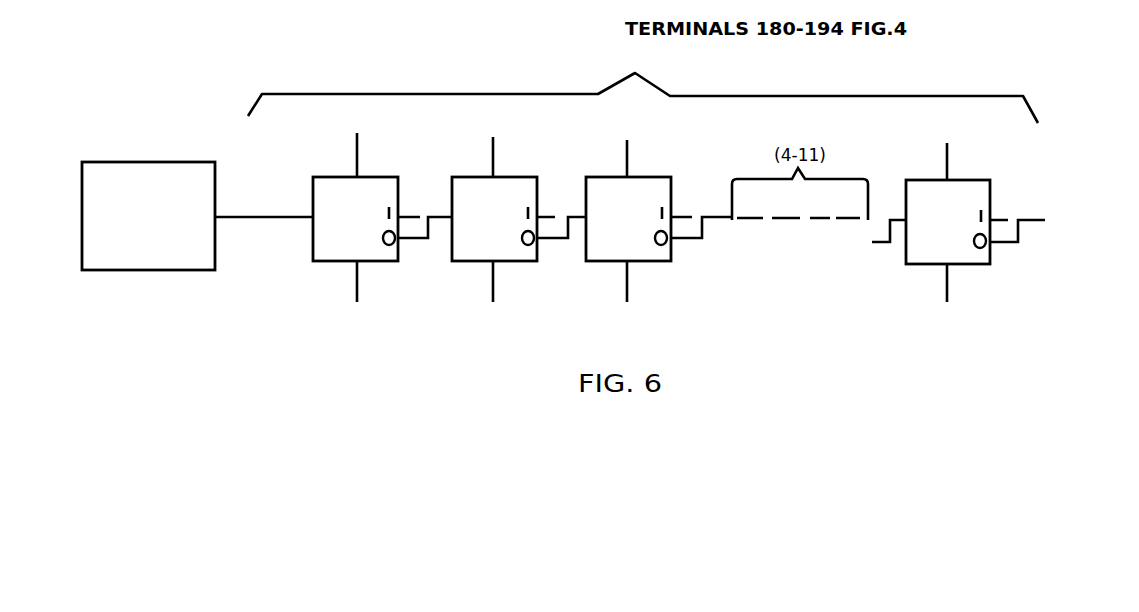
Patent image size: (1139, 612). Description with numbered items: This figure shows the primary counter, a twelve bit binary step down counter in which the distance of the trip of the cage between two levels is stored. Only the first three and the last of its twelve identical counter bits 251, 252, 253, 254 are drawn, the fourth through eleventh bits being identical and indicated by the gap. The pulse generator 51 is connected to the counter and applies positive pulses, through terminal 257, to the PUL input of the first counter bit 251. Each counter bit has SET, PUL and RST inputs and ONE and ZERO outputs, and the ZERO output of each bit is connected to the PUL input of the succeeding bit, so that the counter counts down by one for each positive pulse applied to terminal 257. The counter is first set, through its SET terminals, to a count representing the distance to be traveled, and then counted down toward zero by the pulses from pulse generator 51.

The pulse generator 51 is at (196, 162).
The terminal 257 is at (261, 218).
The first counter bit 251 is at (372, 264).
The second counter bit 252 is at (509, 264).
The third counter bit 253 is at (660, 265).
The twelfth counter bit 254 is at (961, 267).